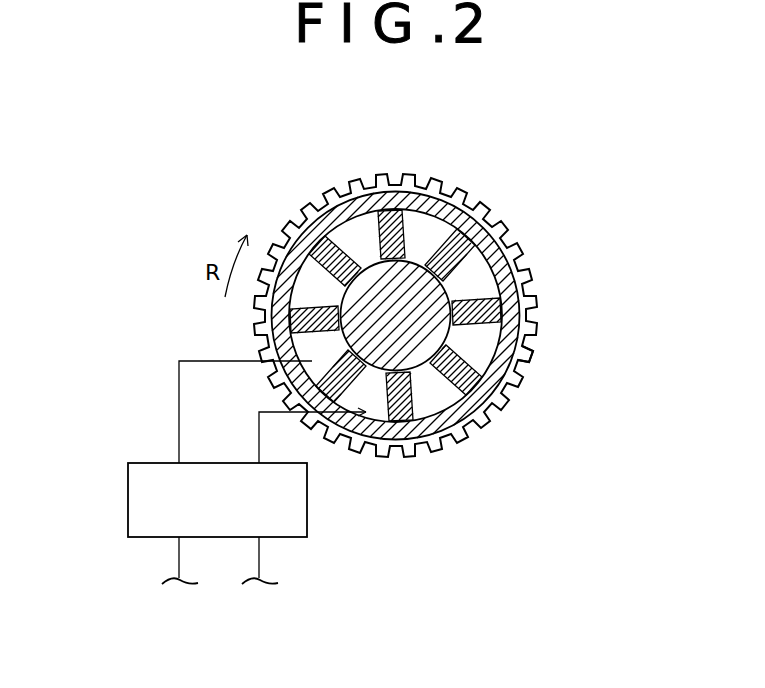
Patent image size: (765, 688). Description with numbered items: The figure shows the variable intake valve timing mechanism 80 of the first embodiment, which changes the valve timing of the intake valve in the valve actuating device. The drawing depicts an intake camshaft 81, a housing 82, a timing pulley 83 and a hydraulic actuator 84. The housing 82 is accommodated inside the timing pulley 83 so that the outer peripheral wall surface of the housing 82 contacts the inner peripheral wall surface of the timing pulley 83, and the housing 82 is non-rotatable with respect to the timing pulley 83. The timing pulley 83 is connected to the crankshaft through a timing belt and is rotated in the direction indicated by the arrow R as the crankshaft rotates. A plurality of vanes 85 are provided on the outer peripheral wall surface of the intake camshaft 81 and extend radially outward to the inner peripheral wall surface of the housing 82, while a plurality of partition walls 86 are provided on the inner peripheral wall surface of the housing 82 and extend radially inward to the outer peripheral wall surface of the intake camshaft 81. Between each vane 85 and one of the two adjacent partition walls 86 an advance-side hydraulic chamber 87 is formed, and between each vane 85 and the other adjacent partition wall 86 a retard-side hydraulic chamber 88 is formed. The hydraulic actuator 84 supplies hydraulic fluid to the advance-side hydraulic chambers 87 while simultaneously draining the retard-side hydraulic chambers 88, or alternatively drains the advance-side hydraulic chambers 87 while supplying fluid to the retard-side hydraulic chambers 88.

The variable intake valve timing mechanism 80 is at (592, 148).
The intake camshaft 81 is at (449, 212).
The housing 82 is at (500, 410).
The timing pulley 83 is at (533, 350).
The hydraulic actuator 84 is at (128, 503).
The vane 85 is at (312, 212).
The partition wall 86 is at (342, 178).
The advance-side hydraulic chamber 87 is at (533, 333).
The retard-side hydraulic chamber 88 is at (300, 349).